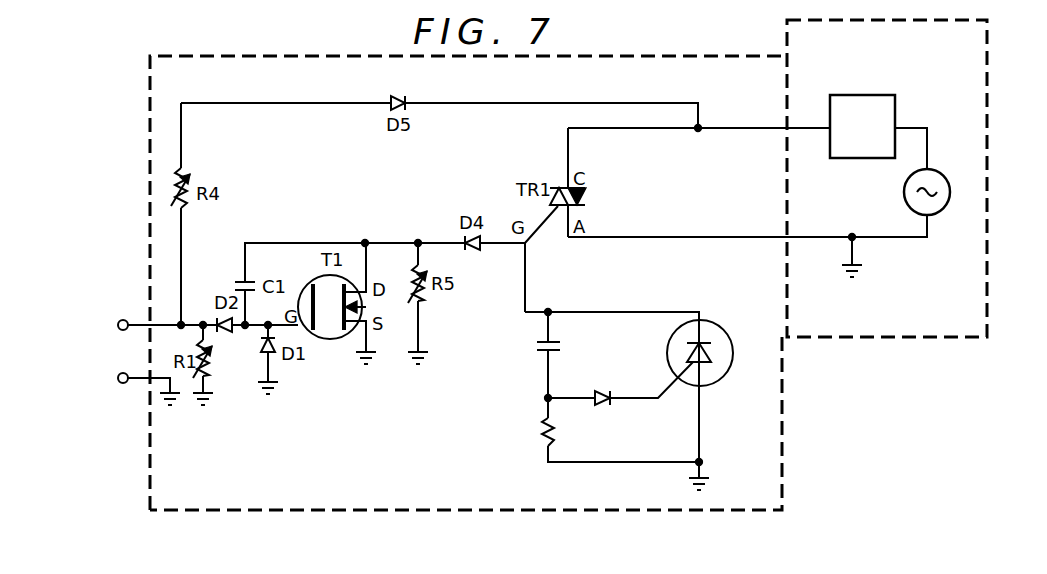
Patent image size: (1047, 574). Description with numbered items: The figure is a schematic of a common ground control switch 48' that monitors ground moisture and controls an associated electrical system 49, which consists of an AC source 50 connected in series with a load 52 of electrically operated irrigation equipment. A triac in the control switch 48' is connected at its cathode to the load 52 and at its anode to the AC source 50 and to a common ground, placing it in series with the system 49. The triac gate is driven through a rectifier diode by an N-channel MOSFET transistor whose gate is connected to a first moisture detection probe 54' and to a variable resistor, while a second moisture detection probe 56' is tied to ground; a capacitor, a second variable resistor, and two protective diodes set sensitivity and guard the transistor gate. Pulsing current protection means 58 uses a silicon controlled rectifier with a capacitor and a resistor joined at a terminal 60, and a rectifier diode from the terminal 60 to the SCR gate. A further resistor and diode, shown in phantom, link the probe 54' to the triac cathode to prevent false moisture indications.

The common ground control switch 48' is at (468, 283).
The associated electrical system 49 is at (975, 52).
The AC source 50 is at (942, 175).
The load 52 is at (895, 108).
The first moisture detection probe 54' is at (162, 299).
The second moisture detection probe 56' is at (143, 404).
The pulsing current protection means 58 is at (611, 396).
The terminal 60 is at (547, 398).